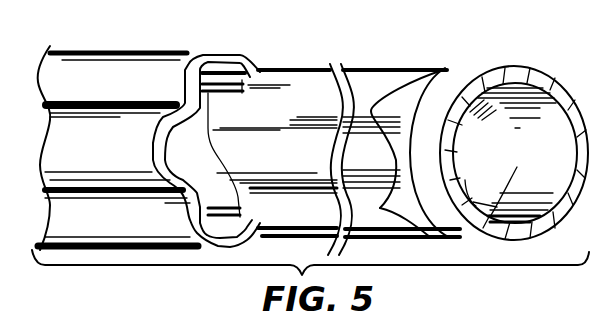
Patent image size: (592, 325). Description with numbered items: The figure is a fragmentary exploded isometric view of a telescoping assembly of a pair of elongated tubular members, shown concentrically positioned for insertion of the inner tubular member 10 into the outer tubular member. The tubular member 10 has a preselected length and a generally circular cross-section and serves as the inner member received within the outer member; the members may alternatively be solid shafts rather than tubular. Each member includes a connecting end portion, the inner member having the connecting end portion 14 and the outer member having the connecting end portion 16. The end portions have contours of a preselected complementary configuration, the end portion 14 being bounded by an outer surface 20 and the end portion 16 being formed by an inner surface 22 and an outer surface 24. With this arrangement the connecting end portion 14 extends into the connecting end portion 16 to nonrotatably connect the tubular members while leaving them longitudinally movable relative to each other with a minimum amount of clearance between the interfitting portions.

The inner tubular member 10 is at (527, 68).
The connecting end portion 14 is at (348, 64).
The connecting end portion 16 is at (147, 48).
The outer surface 20 is at (285, 70).
The inner surface 22 is at (198, 93).
The outer surface 24 is at (179, 63).